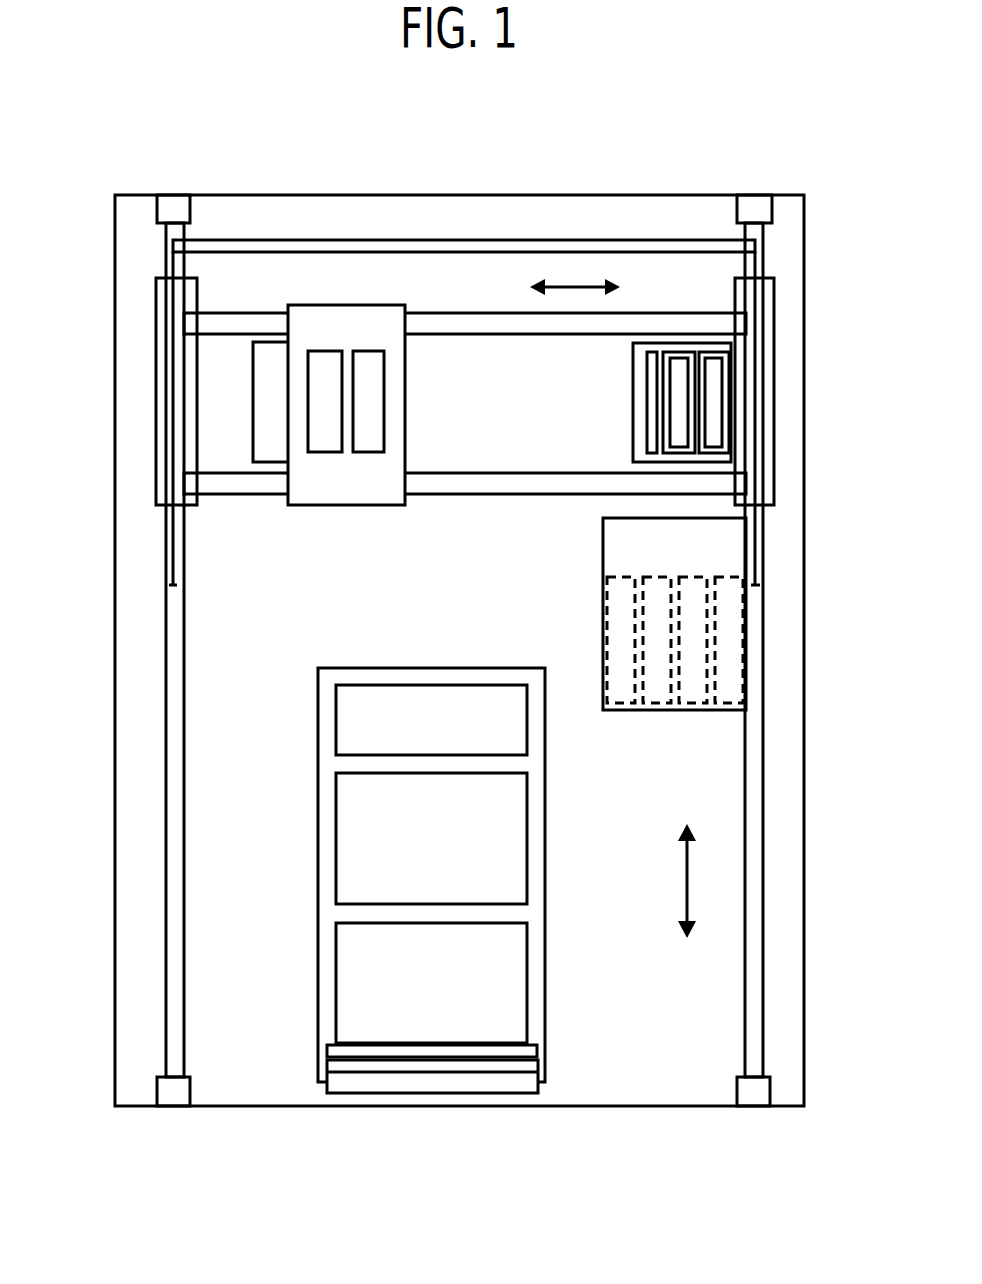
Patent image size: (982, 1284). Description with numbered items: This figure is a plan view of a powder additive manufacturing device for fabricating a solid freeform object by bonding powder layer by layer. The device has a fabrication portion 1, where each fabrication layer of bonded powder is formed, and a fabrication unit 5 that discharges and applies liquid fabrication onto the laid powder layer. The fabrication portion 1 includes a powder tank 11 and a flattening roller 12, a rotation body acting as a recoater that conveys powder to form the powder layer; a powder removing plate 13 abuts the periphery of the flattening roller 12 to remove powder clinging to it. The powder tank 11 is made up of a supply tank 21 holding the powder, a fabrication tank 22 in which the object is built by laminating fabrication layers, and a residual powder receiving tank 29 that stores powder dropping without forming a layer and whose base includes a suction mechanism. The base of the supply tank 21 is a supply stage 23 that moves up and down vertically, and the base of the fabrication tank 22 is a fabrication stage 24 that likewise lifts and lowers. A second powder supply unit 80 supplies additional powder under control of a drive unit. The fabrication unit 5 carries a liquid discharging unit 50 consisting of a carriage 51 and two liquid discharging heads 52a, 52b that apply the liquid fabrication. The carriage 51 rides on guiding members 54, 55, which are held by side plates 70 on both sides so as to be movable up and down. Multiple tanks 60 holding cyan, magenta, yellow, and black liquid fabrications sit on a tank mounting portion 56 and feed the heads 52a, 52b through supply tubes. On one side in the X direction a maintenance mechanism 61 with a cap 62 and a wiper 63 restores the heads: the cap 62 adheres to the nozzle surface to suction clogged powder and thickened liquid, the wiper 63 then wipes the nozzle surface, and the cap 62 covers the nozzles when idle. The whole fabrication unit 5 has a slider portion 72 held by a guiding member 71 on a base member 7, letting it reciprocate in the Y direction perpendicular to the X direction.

The fabrication portion 1 is at (345, 1097).
The fabrication unit 5 is at (150, 260).
The base member 7 is at (785, 900).
The powder tank 11 is at (318, 885).
The flattening roller 12 is at (403, 1082).
The powder removing plate 13 is at (463, 1066).
The supply tank 21 is at (338, 978).
The fabrication tank 22 is at (338, 830).
The supply stage 23 is at (508, 970).
The fabrication stage 24 is at (508, 833).
The residual powder receiving tank 29 is at (338, 722).
The liquid discharging unit 50 is at (351, 292).
The carriage 51 is at (323, 316).
The liquid discharging head 52a is at (367, 443).
The liquid discharging head 52b is at (325, 443).
The guiding member 54 is at (472, 322).
The guiding member 55 is at (502, 482).
The tank mounting portion 56 is at (728, 552).
The tanks 60 is at (728, 640).
The maintenance mechanism 61 is at (632, 372).
The cap 62 is at (715, 402).
The wiper 63 is at (647, 405).
The side plate 70 is at (177, 427).
The guiding member 71 is at (178, 640).
The slider portion 72 is at (162, 365).
The second powder supply unit 80 is at (270, 353).